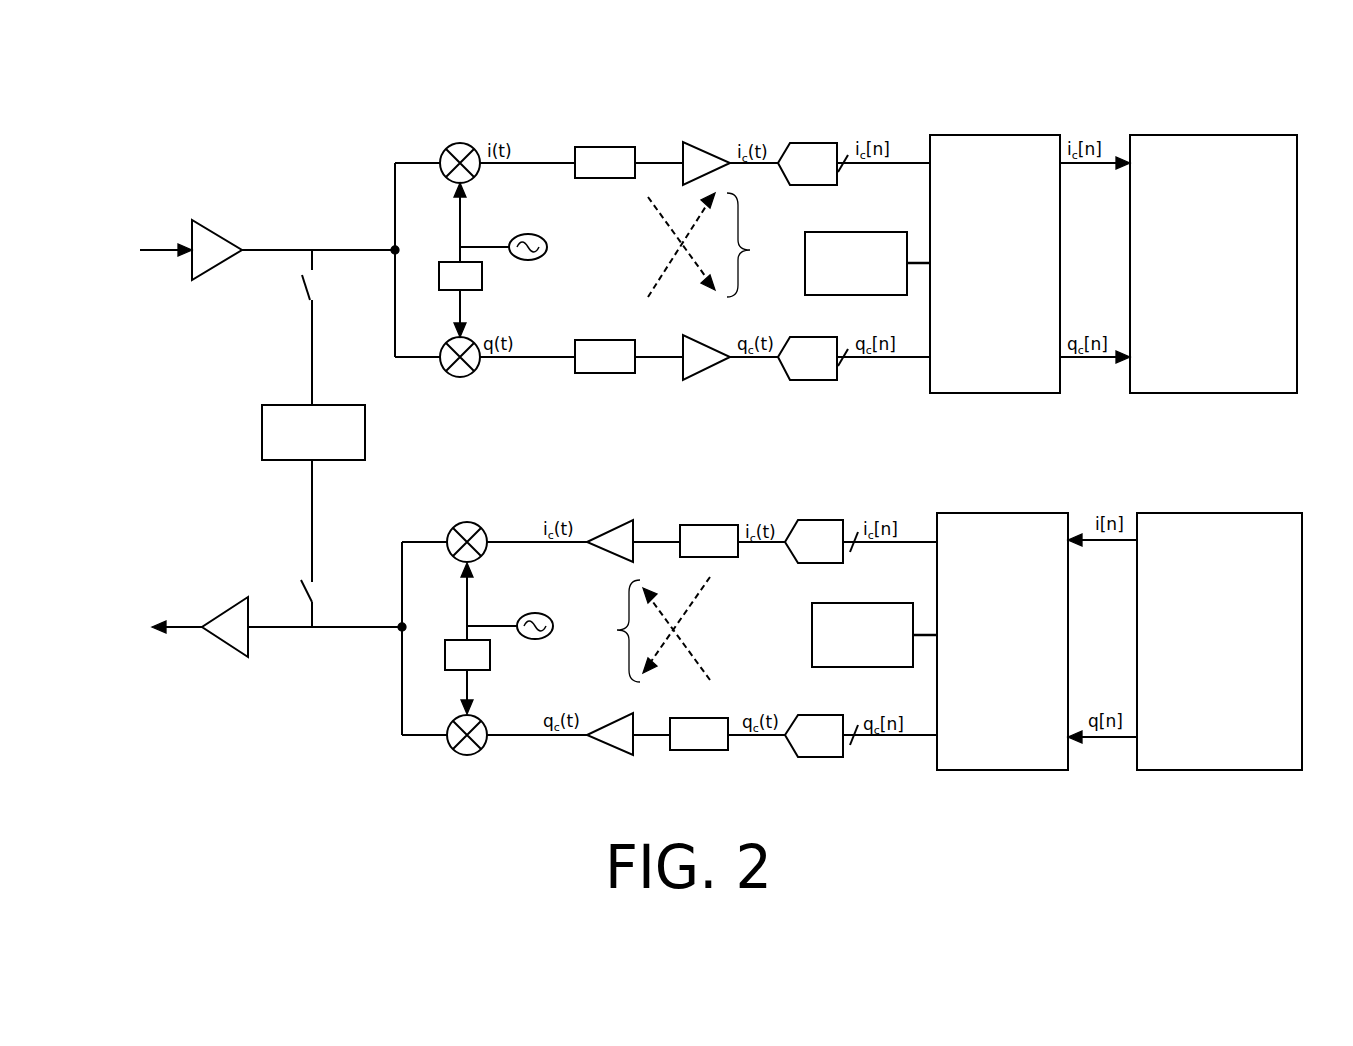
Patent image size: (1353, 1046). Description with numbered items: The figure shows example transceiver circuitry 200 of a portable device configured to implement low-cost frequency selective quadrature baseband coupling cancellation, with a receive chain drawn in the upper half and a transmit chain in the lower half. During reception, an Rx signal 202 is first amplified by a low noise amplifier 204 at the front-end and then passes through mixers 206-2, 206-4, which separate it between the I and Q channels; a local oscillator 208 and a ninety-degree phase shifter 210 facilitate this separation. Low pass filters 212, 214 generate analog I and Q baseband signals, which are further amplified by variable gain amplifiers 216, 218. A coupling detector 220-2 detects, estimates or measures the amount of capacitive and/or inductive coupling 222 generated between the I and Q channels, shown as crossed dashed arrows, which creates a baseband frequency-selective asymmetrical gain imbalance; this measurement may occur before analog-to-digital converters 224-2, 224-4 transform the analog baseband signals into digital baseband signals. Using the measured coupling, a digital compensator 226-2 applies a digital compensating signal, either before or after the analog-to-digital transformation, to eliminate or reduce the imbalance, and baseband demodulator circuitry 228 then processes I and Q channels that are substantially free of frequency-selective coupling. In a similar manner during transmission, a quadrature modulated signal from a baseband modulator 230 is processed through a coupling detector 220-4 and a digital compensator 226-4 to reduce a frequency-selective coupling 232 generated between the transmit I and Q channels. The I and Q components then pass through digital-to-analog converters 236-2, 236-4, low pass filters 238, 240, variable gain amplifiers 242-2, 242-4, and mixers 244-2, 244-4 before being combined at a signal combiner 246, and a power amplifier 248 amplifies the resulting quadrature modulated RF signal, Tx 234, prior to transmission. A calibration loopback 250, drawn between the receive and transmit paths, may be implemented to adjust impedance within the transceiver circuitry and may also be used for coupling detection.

The transceiver circuitry 200 is at (188, 95).
The Rx signal 202 is at (147, 253).
The low noise amplifier 204 is at (218, 233).
The mixer 206-2 is at (446, 149).
The mixer 206-4 is at (460, 378).
The local oscillator 208 is at (540, 237).
The 90° phase shifter 210 is at (458, 262).
The low pass filter 212 is at (597, 178).
The low pass filter 214 is at (603, 340).
The variable gain amplifier 216 is at (680, 143).
The variable gain amplifier 218 is at (683, 382).
The coupling detector 220-2 is at (867, 263).
The coupling detector 220-4 is at (874, 635).
The coupling 222 is at (720, 245).
The analog-to-digital converter 224-2 is at (800, 143).
The analog-to-digital converter 224-4 is at (810, 380).
The digital compensator 226-2 is at (995, 264).
The digital compensator 226-4 is at (1002, 641).
The baseband demodulator circuitry 228 is at (1213, 264).
The baseband modulator 230 is at (1219, 641).
The coupling 232 is at (645, 629).
The Tx signal 234 is at (153, 621).
The digital-to-analog converter 236-2 is at (803, 520).
The digital-to-analog converter 236-4 is at (807, 757).
The low pass filter 238 is at (717, 525).
The low pass filter 240 is at (698, 750).
The variable gain amplifier 242-2 is at (622, 522).
The variable gain amplifier 242-4 is at (605, 747).
The mixer 244-2 is at (453, 528).
The mixer 244-4 is at (455, 750).
The signal combiner 246 is at (398, 632).
The power amplifier 248 is at (233, 600).
The calibration loopback 250 is at (262, 405).